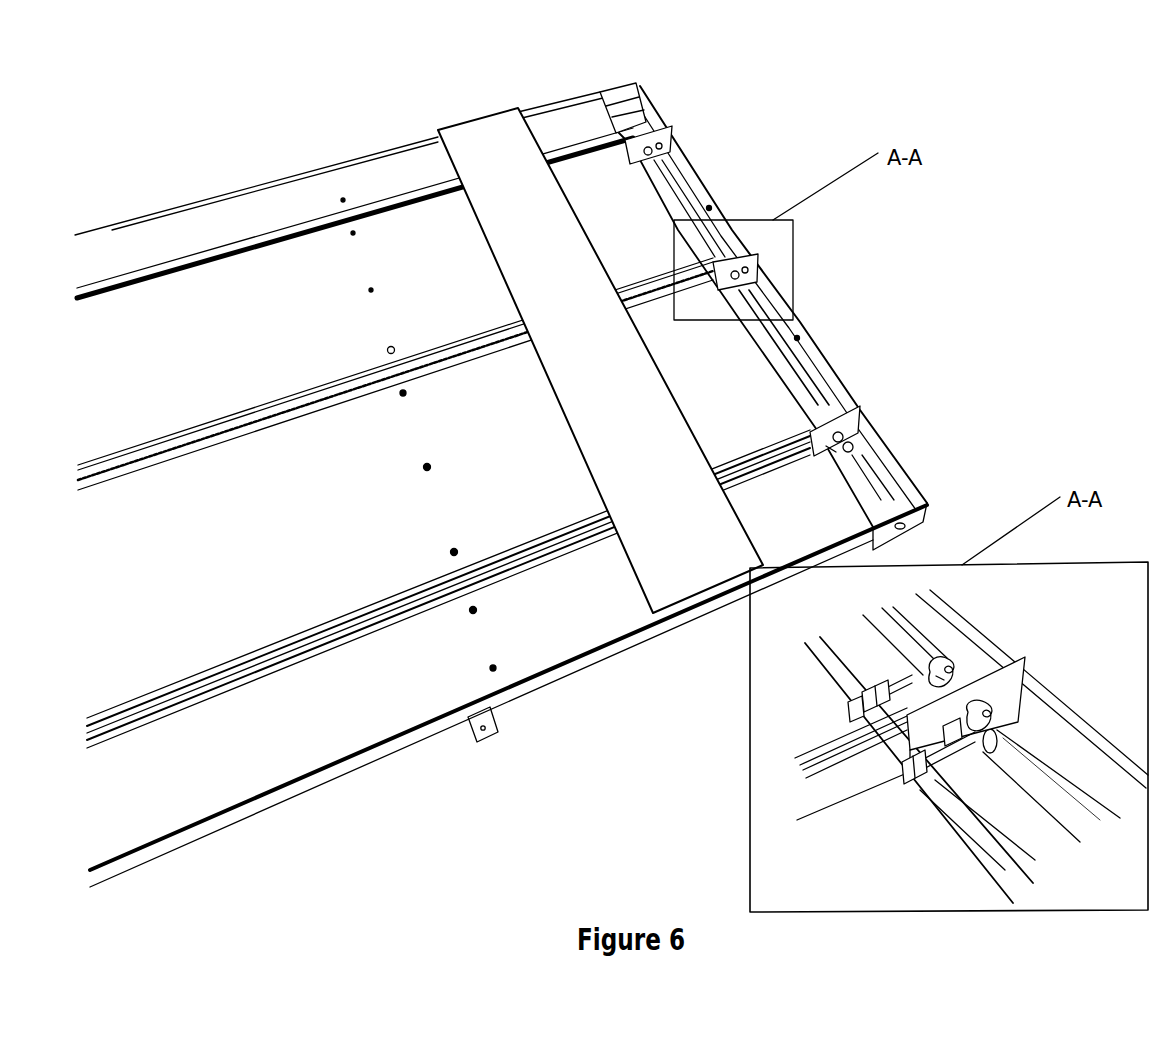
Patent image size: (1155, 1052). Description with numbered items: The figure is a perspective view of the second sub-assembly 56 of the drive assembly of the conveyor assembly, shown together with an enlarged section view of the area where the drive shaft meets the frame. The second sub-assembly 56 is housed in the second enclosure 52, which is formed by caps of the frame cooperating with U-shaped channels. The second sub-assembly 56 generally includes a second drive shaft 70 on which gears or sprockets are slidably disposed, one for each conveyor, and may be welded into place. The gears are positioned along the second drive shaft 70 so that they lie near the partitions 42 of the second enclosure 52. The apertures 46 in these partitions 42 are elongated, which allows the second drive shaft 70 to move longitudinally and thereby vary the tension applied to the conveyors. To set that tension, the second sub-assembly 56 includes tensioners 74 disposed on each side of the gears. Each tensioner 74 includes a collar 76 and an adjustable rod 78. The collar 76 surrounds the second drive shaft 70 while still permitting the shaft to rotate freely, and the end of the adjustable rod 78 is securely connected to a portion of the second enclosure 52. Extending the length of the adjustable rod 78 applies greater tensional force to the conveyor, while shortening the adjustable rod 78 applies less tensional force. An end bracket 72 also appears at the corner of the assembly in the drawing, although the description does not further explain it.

The partition 42 is at (1003, 677).
The aperture 46 is at (947, 732).
The second enclosure 52 is at (613, 117).
The second sub-assembly 56 is at (770, 123).
The second drive shaft 70 is at (808, 378).
The end bracket 72 is at (866, 431).
The tensioner 74 is at (970, 761).
The collar 76 is at (943, 645).
The adjustable rod 78 is at (890, 688).